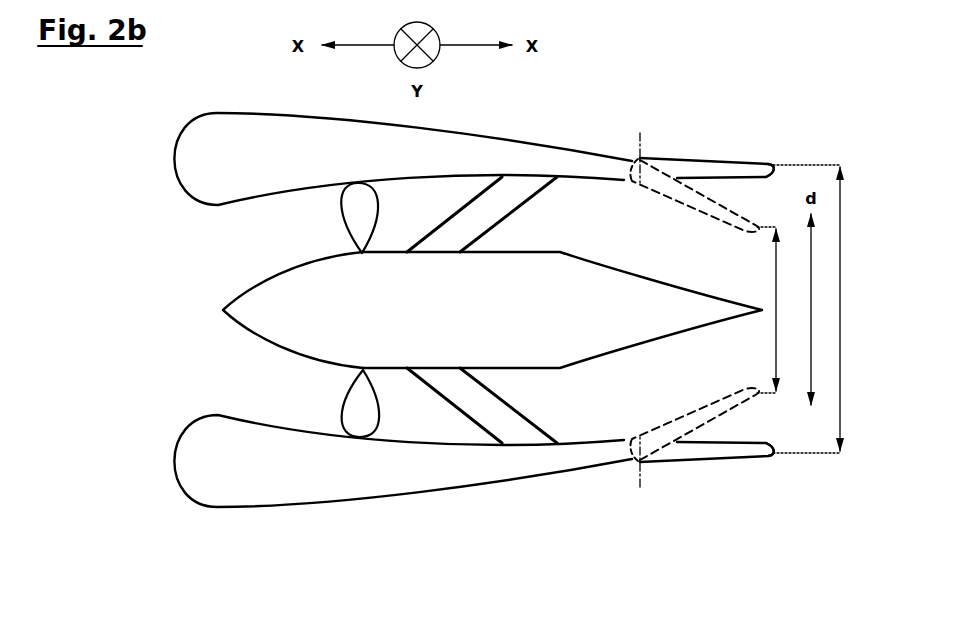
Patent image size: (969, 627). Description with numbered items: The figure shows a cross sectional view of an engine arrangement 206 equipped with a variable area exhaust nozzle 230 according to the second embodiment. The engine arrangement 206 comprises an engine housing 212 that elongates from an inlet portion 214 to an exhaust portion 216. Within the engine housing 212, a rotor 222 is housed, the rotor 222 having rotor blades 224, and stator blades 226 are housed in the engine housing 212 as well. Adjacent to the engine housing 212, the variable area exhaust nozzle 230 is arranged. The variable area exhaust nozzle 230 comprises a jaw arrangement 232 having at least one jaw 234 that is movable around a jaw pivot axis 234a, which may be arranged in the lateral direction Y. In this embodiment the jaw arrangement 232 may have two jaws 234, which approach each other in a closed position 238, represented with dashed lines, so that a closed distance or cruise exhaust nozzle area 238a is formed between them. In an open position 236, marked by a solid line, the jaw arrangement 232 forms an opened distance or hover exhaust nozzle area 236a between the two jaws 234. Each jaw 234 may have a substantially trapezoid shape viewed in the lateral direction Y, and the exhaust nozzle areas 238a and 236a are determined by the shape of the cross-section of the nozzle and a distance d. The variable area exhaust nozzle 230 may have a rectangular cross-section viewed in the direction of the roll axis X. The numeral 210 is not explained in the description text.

The engine arrangement 206 is at (152, 248).
The propulsion unit nacelle 210 is at (403, 322).
The engine housing 212 is at (167, 482).
The inlet portion 214 is at (220, 345).
The exhaust portion 216 is at (634, 431).
The rotor 222 is at (372, 302).
The rotor blades 224 is at (345, 233).
The stator blades 226 is at (502, 197).
The variable area exhaust nozzle 230 is at (733, 148).
The jaw arrangement 232 is at (673, 148).
The jaw 234 is at (777, 162).
The jaw pivot axis 234a is at (634, 148).
The open position 236 is at (752, 463).
The hover exhaust nozzle area 236a is at (835, 309).
The closed position 238 is at (734, 416).
The cruise exhaust nozzle area 238a is at (751, 310).